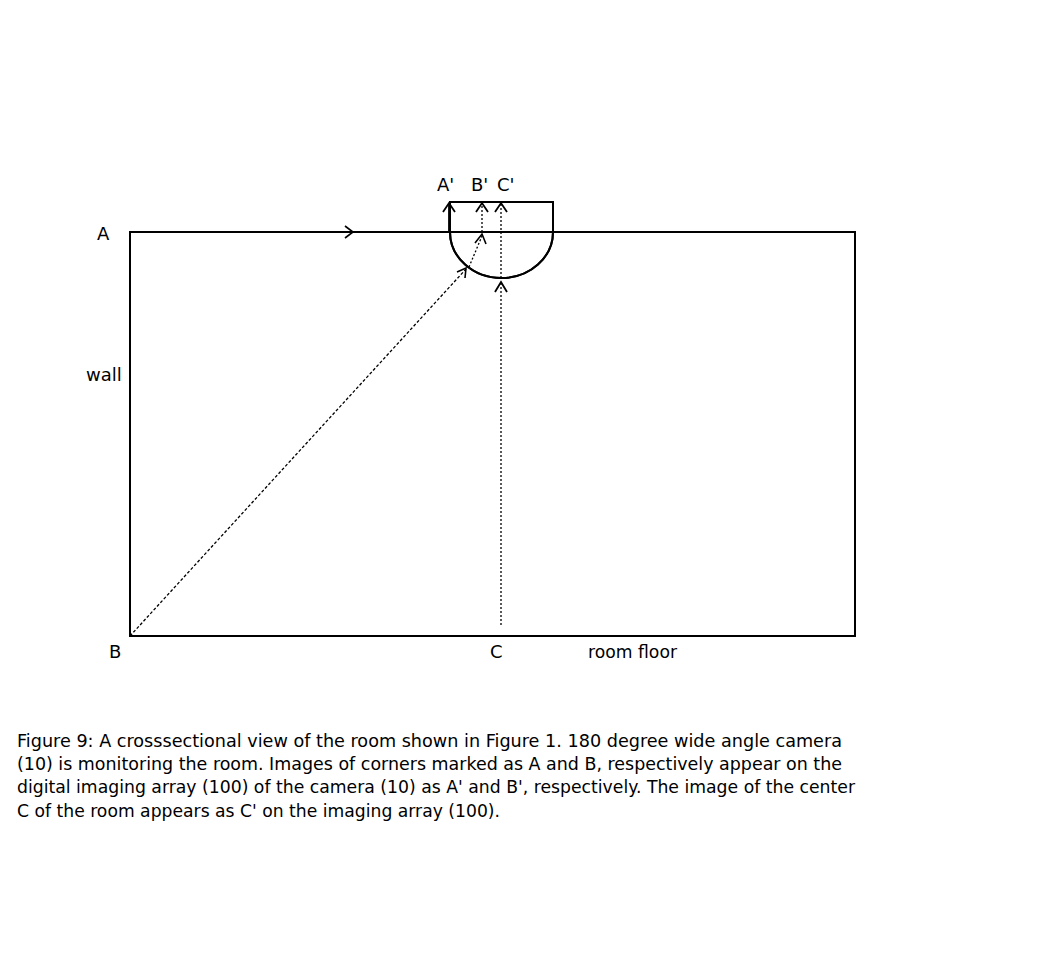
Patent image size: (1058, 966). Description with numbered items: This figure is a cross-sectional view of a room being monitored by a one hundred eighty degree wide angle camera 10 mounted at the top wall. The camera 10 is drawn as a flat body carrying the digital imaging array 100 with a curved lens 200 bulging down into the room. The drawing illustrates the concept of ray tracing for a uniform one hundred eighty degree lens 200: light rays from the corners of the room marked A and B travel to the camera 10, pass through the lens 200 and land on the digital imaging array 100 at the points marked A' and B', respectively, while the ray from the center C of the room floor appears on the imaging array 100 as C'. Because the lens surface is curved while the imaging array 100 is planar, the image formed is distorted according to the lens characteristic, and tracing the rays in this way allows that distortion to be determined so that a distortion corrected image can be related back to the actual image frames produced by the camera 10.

The camera 10 is at (560, 215).
The digital imaging array 100 is at (550, 196).
The wide angle lens 200 is at (560, 249).